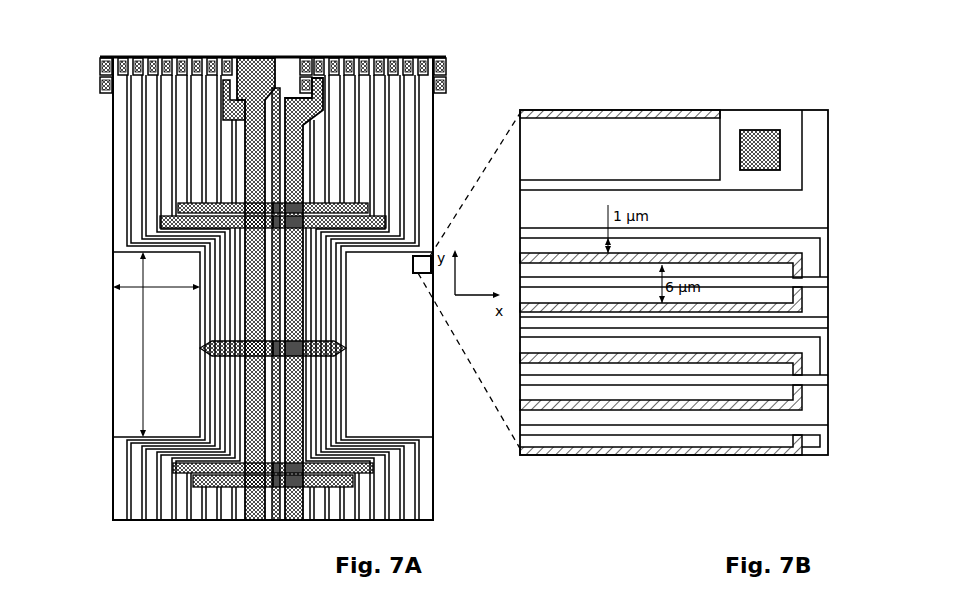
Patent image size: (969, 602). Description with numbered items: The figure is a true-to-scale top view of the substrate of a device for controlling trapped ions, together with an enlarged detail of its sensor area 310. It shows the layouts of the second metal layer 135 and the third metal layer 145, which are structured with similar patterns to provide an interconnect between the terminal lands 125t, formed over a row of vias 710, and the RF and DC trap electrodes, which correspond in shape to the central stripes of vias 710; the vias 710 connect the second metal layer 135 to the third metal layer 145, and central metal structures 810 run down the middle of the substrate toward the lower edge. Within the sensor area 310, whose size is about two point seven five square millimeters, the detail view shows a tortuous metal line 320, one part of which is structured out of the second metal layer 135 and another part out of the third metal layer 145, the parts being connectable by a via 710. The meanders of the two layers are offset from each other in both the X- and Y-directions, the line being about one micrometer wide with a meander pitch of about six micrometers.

In FIG. 7A, the terminal lands 125t is at (453, 67).
In FIG. 7A, the vias 710 is at (98, 80).
In FIG. 7B, the vias 710 is at (780, 146).
In FIG. 7A, the second metal layer 135 is at (195, 129).
In FIG. 7B, the second metal layer 135 is at (848, 212).
In FIG. 7A, the third metal layer 145 is at (228, 297).
In FIG. 7B, the third metal layer 145 is at (628, 110).
In FIG. 7A, the sensor area 310 is at (127, 347).
In FIG. 7A, the central bus bar 810 is at (297, 521).
In FIG. 7B, the tortuous metal line 320 is at (809, 103).